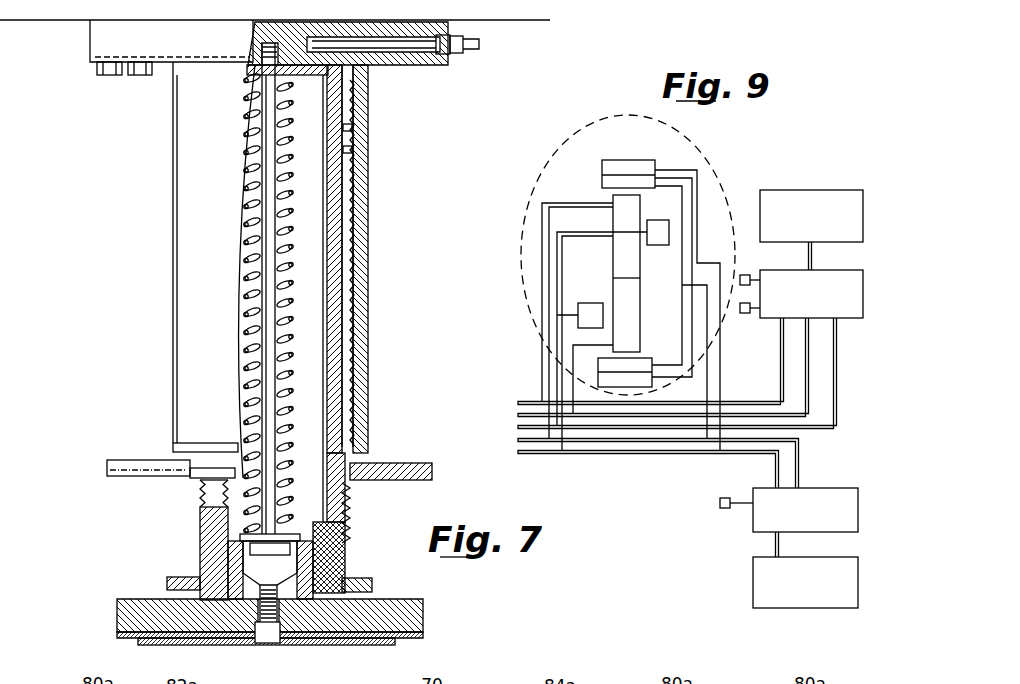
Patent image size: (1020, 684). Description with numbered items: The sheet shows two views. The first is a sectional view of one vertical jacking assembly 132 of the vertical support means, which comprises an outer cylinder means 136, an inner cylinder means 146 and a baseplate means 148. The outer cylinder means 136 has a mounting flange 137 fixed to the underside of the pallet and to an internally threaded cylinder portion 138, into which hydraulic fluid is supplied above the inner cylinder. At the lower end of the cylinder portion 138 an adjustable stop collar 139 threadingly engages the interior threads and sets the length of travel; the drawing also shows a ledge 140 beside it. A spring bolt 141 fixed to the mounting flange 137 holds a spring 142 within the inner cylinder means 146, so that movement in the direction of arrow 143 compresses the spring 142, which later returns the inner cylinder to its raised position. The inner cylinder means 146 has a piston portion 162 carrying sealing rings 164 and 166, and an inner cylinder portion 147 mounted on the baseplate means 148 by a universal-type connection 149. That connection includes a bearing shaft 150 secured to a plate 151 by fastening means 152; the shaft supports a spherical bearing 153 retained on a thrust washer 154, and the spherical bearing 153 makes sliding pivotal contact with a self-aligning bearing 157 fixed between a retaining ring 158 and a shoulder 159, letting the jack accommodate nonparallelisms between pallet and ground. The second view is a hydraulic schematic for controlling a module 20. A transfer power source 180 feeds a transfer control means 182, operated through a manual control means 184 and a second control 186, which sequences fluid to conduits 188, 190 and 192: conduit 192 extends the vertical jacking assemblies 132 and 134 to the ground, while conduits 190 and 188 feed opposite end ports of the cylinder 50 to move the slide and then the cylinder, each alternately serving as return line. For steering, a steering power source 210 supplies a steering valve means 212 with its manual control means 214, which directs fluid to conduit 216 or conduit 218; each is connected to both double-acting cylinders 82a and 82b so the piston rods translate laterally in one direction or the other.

In FIG. 7, the vertical jacking assembly 132 is at (172, 277).
In FIG. 9, the vertical jacking assembly 132 is at (592, 304).
In FIG. 7, the mounting flange 137 is at (404, 66).
In FIG. 7, the piston portion 162 is at (347, 66).
In FIG. 7, the internally threaded cylinder portion 138 is at (370, 112).
In FIG. 7, the outer cylinder means 136 is at (368, 366).
In FIG. 7, the sealing ring 164 is at (352, 128).
In FIG. 7, the sealing ring 166 is at (352, 150).
In FIG. 7, the spring bolt 141 is at (275, 250).
In FIG. 7, the spring 142 is at (287, 275).
In FIG. 7, the arrow 143 is at (310, 393).
In FIG. 7, the adjustable stop collar 139 is at (405, 463).
In FIG. 7, the ledge 140 is at (114, 464).
In FIG. 7, the inner cylinder means 146 is at (199, 510).
In FIG. 7, the inner cylinder portion 147 is at (346, 495).
In FIG. 7, the shoulder 159 is at (346, 532).
In FIG. 7, the self-aligning bearing 157 is at (346, 567).
In FIG. 7, the baseplate means 148 is at (117, 619).
In FIG. 7, the retaining ring 158 is at (270, 624).
In FIG. 7, the plate 151 is at (420, 622).
In FIG. 7, the universal-type connection 149 is at (332, 558).
In FIG. 7, the thrust washer 154 is at (240, 592).
In FIG. 7, the spherical bearing 153 is at (308, 588).
In FIG. 7, the bearing shaft 150 is at (310, 540).
In FIG. 7, the fastening means 152 is at (186, 578).
In FIG. 9, the module 20 is at (722, 178).
In FIG. 9, the cylinder 82b is at (640, 160).
In FIG. 9, the cylinder 50 is at (641, 316).
In FIG. 9, the vertical jacking assembly 134 is at (659, 226).
In FIG. 9, the cylinder 82a is at (641, 362).
In FIG. 9, the conduit 188 is at (746, 402).
In FIG. 9, the conduit 190 is at (684, 414).
In FIG. 9, the conduit 192 is at (738, 431).
In FIG. 9, the conduit 218 is at (685, 444).
In FIG. 9, the conduit 216 is at (655, 456).
In FIG. 9, the transfer power source 180 is at (862, 190).
In FIG. 9, the transfer control means 182 is at (853, 270).
In FIG. 9, the manual control means 184 is at (745, 275).
In FIG. 9, the control port 186 is at (745, 313).
In FIG. 9, the steering valve means 212 is at (843, 488).
In FIG. 9, the manual control means 214 is at (720, 507).
In FIG. 9, the steering power source 210 is at (814, 608).